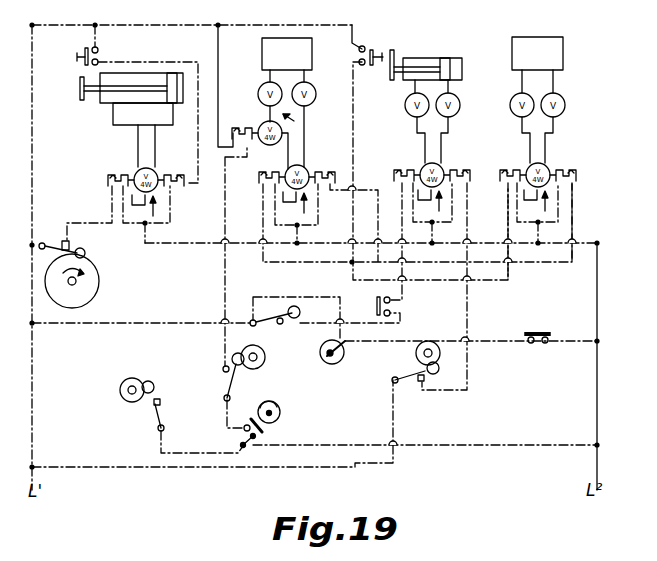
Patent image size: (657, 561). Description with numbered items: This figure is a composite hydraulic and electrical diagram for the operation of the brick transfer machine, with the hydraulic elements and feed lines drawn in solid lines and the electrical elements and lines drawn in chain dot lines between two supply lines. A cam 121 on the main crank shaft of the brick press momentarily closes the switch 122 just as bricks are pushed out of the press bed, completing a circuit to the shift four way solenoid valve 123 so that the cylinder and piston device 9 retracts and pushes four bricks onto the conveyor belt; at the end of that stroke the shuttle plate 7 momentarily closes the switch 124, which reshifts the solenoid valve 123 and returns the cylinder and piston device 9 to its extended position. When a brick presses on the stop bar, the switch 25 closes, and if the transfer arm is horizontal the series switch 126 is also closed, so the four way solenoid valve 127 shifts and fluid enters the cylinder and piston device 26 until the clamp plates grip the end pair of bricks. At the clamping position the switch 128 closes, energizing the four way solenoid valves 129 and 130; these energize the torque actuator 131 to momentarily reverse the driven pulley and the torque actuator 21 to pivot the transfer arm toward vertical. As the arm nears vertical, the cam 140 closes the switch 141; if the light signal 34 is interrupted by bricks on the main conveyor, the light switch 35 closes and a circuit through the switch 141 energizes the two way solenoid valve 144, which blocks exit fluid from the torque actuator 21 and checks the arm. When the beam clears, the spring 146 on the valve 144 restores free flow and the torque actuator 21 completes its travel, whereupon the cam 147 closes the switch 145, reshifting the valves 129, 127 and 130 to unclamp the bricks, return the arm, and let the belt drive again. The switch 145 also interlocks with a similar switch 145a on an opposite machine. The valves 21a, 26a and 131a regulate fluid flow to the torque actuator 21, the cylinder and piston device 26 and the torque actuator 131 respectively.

The shuttle plate 7 is at (80, 86).
The cylinder and piston device 9 is at (112, 96).
The torque actuator 21 is at (307, 60).
The valves 21a is at (296, 85).
The switch 25 is at (393, 328).
The cylinder and piston device 26 is at (432, 60).
The valves 26a is at (438, 96).
The light signal 34 is at (335, 364).
The light switch 35 is at (283, 418).
The cam 121 is at (97, 285).
The switch 122 is at (63, 240).
The shift four way solenoid valve 123 is at (136, 170).
The switch 124 is at (93, 48).
The series switch 126 is at (277, 323).
The four way solenoid valve 127 is at (423, 165).
The switch 128 is at (358, 47).
The four way solenoid valve 129 is at (286, 169).
The four way solenoid valve 130 is at (528, 165).
The torque actuator 131 is at (517, 60).
The valves 131a is at (544, 95).
The cam 140 is at (265, 357).
The switch 141 is at (222, 378).
The two way solenoid valve 144 is at (261, 124).
The switch 145 is at (415, 386).
The interlock switch 145a is at (163, 405).
The spring 146 is at (300, 128).
The cam 147 is at (416, 355).